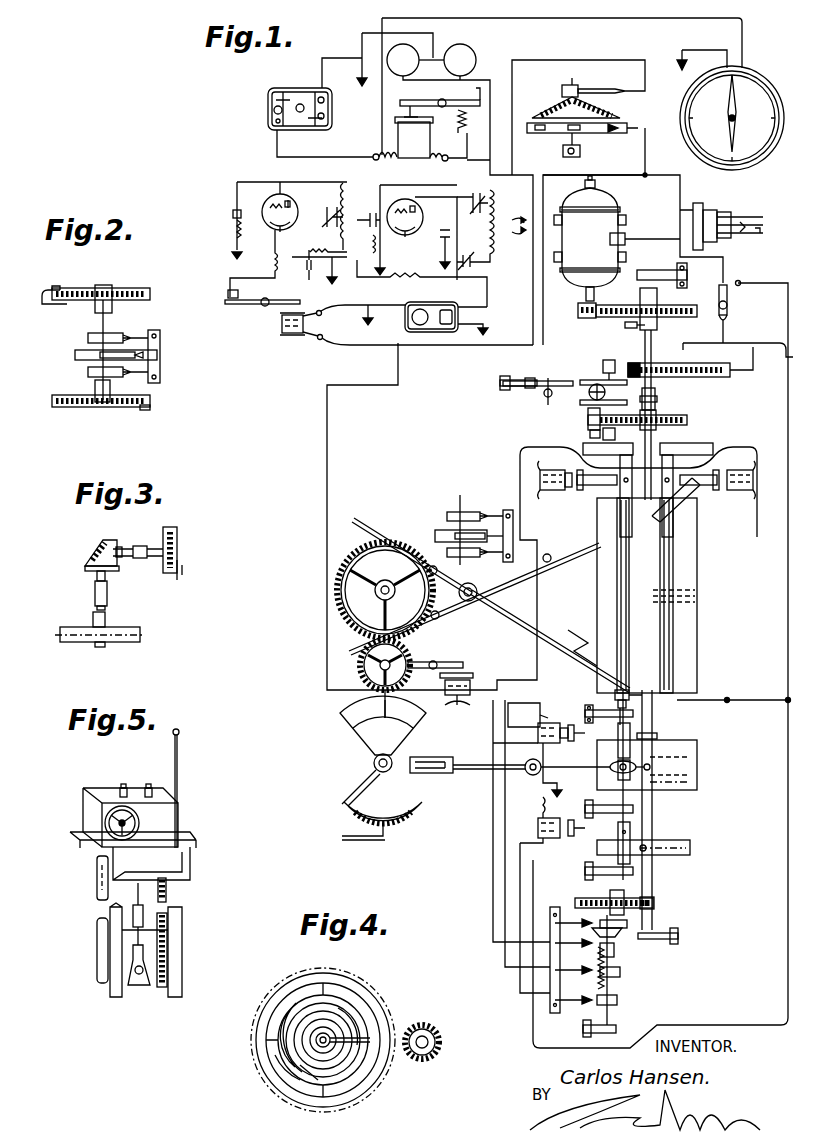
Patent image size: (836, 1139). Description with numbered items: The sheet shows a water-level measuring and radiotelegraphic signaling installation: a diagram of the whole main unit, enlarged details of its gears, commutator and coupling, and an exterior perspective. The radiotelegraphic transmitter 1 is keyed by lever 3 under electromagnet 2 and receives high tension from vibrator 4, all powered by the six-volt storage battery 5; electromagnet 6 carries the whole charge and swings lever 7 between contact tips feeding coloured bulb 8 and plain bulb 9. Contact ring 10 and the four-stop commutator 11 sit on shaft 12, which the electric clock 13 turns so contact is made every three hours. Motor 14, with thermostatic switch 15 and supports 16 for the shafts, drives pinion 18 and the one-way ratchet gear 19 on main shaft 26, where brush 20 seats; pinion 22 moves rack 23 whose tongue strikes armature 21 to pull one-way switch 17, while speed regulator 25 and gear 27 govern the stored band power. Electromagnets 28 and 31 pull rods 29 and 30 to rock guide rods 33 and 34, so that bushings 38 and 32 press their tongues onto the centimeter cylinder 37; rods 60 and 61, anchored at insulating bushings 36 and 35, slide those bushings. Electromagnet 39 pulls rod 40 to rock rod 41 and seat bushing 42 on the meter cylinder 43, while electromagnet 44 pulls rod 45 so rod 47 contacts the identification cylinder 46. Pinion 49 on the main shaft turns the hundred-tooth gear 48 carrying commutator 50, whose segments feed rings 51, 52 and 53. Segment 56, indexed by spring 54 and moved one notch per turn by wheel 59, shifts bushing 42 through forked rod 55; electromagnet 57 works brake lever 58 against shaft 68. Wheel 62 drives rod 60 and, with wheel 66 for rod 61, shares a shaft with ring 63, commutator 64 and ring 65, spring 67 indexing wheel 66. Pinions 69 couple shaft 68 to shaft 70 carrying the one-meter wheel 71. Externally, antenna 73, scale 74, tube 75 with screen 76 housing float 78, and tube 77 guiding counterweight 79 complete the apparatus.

In FIG. 1, the radiotelegraphic transmitter connection diagram 1 is at (378, 235).
In FIG. 1, the electromagnet 2 is at (288, 333).
In FIG. 1, the lever 3 is at (262, 292).
In FIG. 1, the synchronic type vibrator 4 is at (437, 302).
In FIG. 1, the six-volt storage battery 5 is at (299, 88).
In FIG. 1, the electromagnet 6 is at (421, 139).
In FIG. 1, the lever 7 is at (400, 101).
In FIG. 1, the coloured light-bulb 8 is at (415, 60).
In FIG. 5, the coloured light-bulb 8 is at (123, 778).
In FIG. 1, the six-volt light bulb 9 is at (460, 60).
In FIG. 5, the six-volt light bulb 9 is at (150, 778).
In FIG. 1, the contact ring 10 is at (562, 88).
In FIG. 1, the commutator 11 is at (535, 130).
In FIG. 1, the shaft 12 is at (582, 150).
In FIG. 1, the electric clock 13 is at (732, 118).
In FIG. 1, the six-volt electric motor 14 is at (617, 238).
In FIG. 1, the thermostatic switch 15 is at (735, 215).
In FIG. 1, the supports 16 is at (686, 281).
In FIG. 1, the one-way switch 17 is at (729, 298).
In FIG. 1, the pinion 18 is at (578, 312).
In FIG. 1, the gear with pawl and ratchet 19 is at (622, 305).
In FIG. 1, the brush 20 is at (628, 329).
In FIG. 1, the inverted U-shaped armature 21 is at (770, 342).
In FIG. 1, the 25-tooth pinion 22 is at (652, 362).
In FIG. 1, the rack 23 is at (712, 381).
In FIG. 1, the unwinding speed regulator 25 is at (548, 402).
In FIG. 1, the main shaft 26 is at (656, 398).
In FIG. 1, the gear 27 is at (690, 421).
In FIG. 1, the six-volt electromagnet 28 is at (552, 493).
In FIG. 1, the rod 29 is at (598, 486).
In FIG. 1, the rod 30 is at (696, 474).
In FIG. 1, the electromagnet 31 is at (736, 492).
In FIG. 1, the bushing 32 is at (690, 521).
In FIG. 1, the rod 33 is at (619, 566).
In FIG. 1, the metal rod 34 is at (673, 561).
In FIG. 1, the fixed insulating bushing 35 is at (548, 563).
In FIG. 1, the fixed insulating bushing 36 is at (575, 633).
In FIG. 1, the hollow metal cylinder 37 is at (698, 607).
In FIG. 1, the bushing 38 is at (628, 674).
In FIG. 1, the six-volt electromagnet 39 is at (528, 715).
In FIG. 1, the rod 40 is at (555, 723).
In FIG. 1, the rod 41 is at (632, 752).
In FIG. 1, the bushing 42 is at (610, 771).
In FIG. 1, the cylinder 43 is at (698, 770).
In FIG. 1, the six-volt electromagnet 44 is at (540, 836).
In FIG. 1, the rod 45 is at (585, 808).
In FIG. 1, the cylinder 46 is at (692, 850).
In FIG. 1, the simple rod 47 is at (632, 858).
In FIG. 1, the 100-tooth gear 48 is at (585, 898).
In FIG. 4, the 100-tooth gear 48 is at (347, 1108).
In FIG. 1, the 25-tooth pinion 49 is at (655, 904).
In FIG. 4, the 25-tooth pinion 49 is at (438, 1055).
In FIG. 1, the commutator 50 is at (627, 924).
In FIG. 4, the commutator 50 is at (275, 1055).
In FIG. 1, the ring 51 is at (614, 950).
In FIG. 4, the ring 51 is at (292, 1006).
In FIG. 1, the ring 52 is at (620, 973).
In FIG. 4, the ring 52 is at (303, 1087).
In FIG. 1, the ring 53 is at (617, 1000).
In FIG. 4, the ring 53 is at (357, 1010).
In FIG. 1, the steel spring 54 is at (368, 841).
In FIG. 1, the metal rod 55 is at (470, 757).
In FIG. 1, the segment 56 is at (383, 734).
In FIG. 1, the six-volt electromagnet 57 is at (457, 704).
In FIG. 1, the brake lever 58 is at (453, 657).
In FIG. 1, the wheel 59 is at (361, 672).
In FIG. 3, the wheel 59 is at (170, 575).
In FIG. 1, the rod 60 is at (493, 612).
In FIG. 1, the rod 61 is at (523, 588).
In FIG. 1, the wheel 62 is at (385, 590).
In FIG. 2, the wheel 62 is at (60, 407).
In FIG. 1, the ring 63 is at (447, 553).
In FIG. 2, the ring 63 is at (88, 372).
In FIG. 1, the commutator 64 is at (435, 534).
In FIG. 2, the commutator 64 is at (75, 355).
In FIG. 1, the ring 65 is at (447, 513).
In FIG. 2, the ring 65 is at (88, 338).
In FIG. 2, the wheel 66 is at (146, 288).
In FIG. 2, the spring 67 is at (58, 306).
In FIG. 3, the shaft 68 is at (138, 560).
In FIG. 3, the symmetrical pinions 69 is at (90, 565).
In FIG. 3, the shaft 70 is at (95, 598).
In FIG. 3, the wheel 71 is at (125, 645).
In FIG. 5, the wheel 71 is at (102, 818).
In FIG. 5, the antenna 73 is at (178, 762).
In FIG. 5, the metric scale 74 is at (166, 897).
In FIG. 5, the tube 75 is at (170, 915).
In FIG. 5, the protective screen 76 is at (138, 987).
In FIG. 5, the hollow tube 77 is at (97, 956).
In FIG. 5, the float 78 is at (133, 915).
In FIG. 5, the counterweight 79 is at (97, 893).